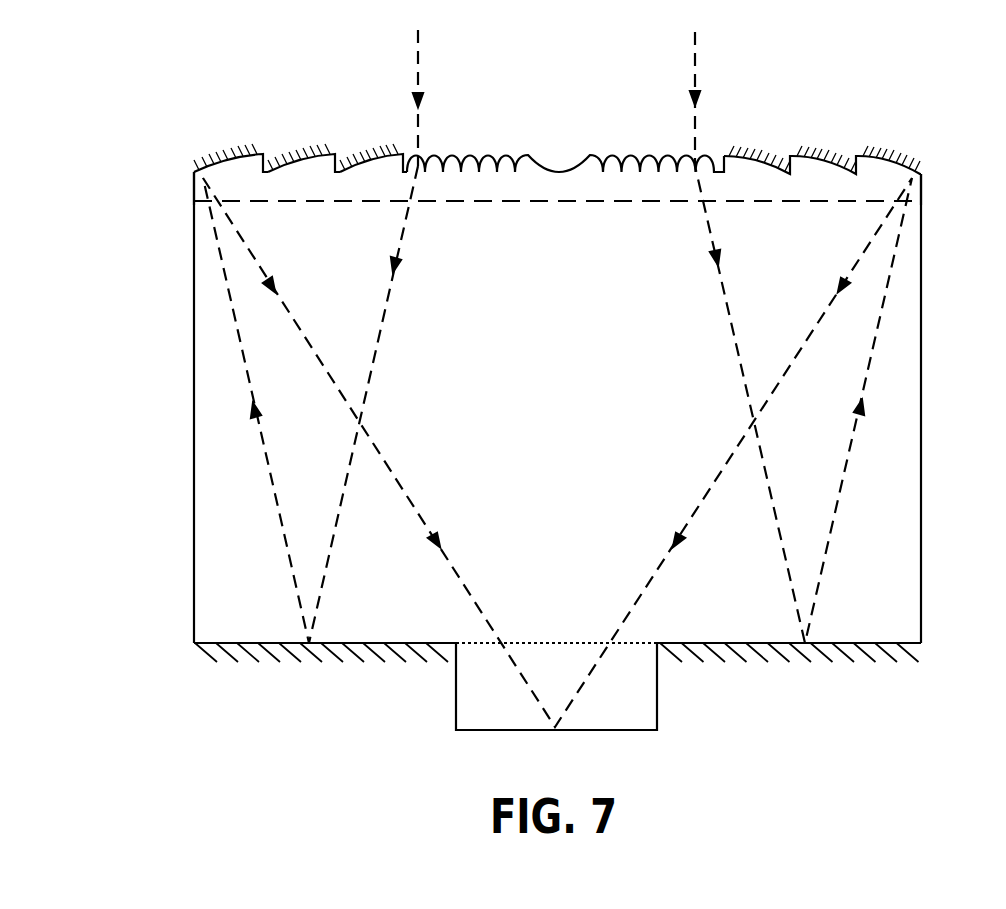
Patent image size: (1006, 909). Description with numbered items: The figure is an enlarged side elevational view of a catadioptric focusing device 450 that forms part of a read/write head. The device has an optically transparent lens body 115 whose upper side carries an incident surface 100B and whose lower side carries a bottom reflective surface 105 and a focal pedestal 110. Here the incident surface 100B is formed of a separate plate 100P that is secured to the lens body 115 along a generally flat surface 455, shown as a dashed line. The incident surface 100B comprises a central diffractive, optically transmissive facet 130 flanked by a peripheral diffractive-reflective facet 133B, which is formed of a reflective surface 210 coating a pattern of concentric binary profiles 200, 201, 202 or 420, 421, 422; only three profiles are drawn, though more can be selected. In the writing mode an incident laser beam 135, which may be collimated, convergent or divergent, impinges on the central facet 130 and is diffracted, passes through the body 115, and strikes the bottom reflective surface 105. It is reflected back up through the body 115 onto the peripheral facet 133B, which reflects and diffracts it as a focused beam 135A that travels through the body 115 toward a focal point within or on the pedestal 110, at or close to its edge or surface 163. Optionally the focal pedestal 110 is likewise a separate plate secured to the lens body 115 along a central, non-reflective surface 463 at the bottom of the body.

The focusing device 450 is at (575, 37).
The incident surface 100B is at (158, 186).
The separate plate 100P is at (883, 188).
The bottom reflective surface 105 is at (178, 664).
The focal pedestal 110 is at (443, 709).
The body 115 is at (212, 505).
The central facet 130 is at (629, 143).
The peripheral diffractive-reflective facet 133B is at (903, 145).
The laser beam 135 is at (417, 135).
The focused beam 135A is at (410, 493).
The edge or surface of the pedestal 163 is at (627, 730).
The diffractive profile 200 is at (200, 118).
The concentric binary diffractive profile 420 is at (188, 150).
The diffractive profile 201 is at (273, 101).
The concentric binary diffractive profile 421 is at (293, 150).
The diffractive profile 202 is at (338, 110).
The concentric binary diffractive profile 422 is at (357, 148).
The reflective surface 210 is at (780, 148).
The generally flat surface 455 is at (460, 210).
The central non-reflective surface 463 is at (587, 643).